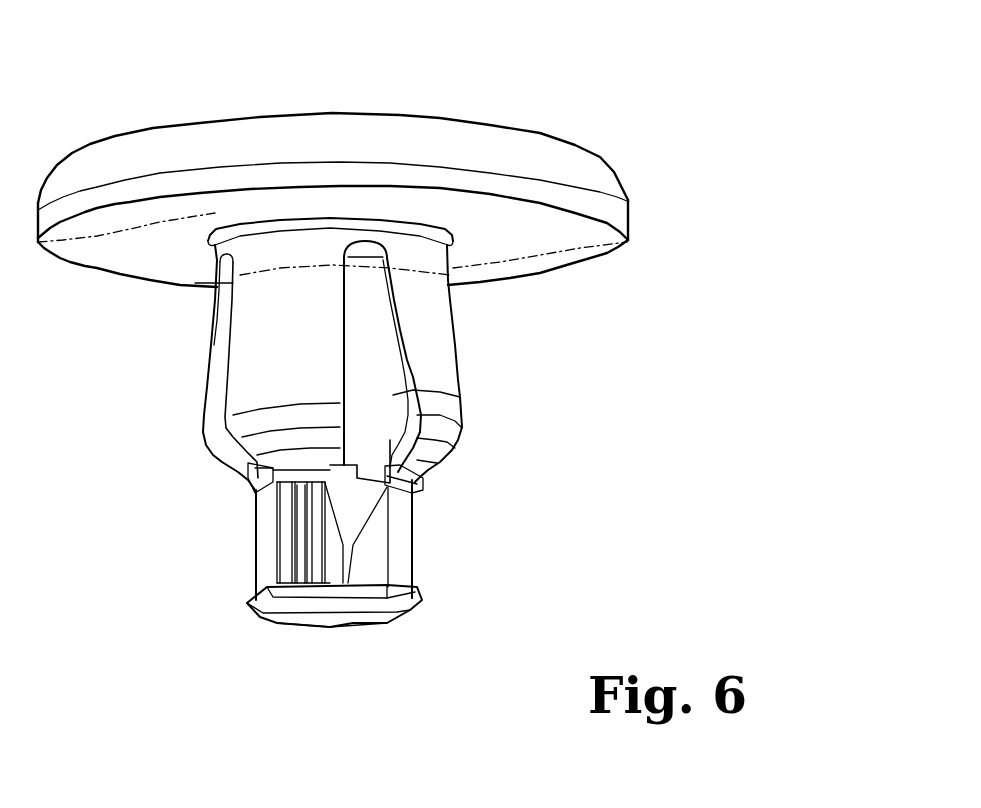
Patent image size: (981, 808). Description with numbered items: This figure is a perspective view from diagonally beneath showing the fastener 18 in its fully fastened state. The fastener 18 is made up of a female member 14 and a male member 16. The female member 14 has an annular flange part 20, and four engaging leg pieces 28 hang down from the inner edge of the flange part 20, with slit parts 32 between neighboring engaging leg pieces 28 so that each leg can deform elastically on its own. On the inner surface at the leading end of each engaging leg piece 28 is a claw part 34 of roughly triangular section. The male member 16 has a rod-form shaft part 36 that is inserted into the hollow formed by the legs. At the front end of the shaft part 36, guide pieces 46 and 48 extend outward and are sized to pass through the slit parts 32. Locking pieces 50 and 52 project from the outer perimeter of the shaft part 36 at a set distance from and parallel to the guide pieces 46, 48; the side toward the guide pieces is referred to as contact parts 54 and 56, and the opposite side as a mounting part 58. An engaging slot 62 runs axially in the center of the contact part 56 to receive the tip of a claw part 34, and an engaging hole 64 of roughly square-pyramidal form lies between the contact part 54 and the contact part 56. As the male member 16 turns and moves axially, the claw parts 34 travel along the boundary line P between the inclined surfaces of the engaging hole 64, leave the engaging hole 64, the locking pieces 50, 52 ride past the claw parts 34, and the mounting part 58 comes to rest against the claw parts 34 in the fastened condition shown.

The female member 14 is at (624, 170).
The male member 16 is at (344, 573).
The fastener 18 is at (558, 73).
The flange part 20 is at (480, 132).
The engaging leg piece 28 is at (247, 353).
The slit part 32 is at (392, 350).
The claw part 34 is at (395, 445).
The shaft part 36 is at (400, 632).
The guide piece 46 is at (425, 605).
The guide piece 48 is at (297, 597).
The locking piece 50 is at (428, 463).
The locking piece 52 is at (222, 460).
The contact part 54 is at (407, 528).
The contact part 56 is at (287, 533).
The mounting part 58 is at (458, 395).
The engaging slot 62 is at (307, 553).
The engaging hole 64 is at (373, 550).
The boundary line P is at (412, 510).